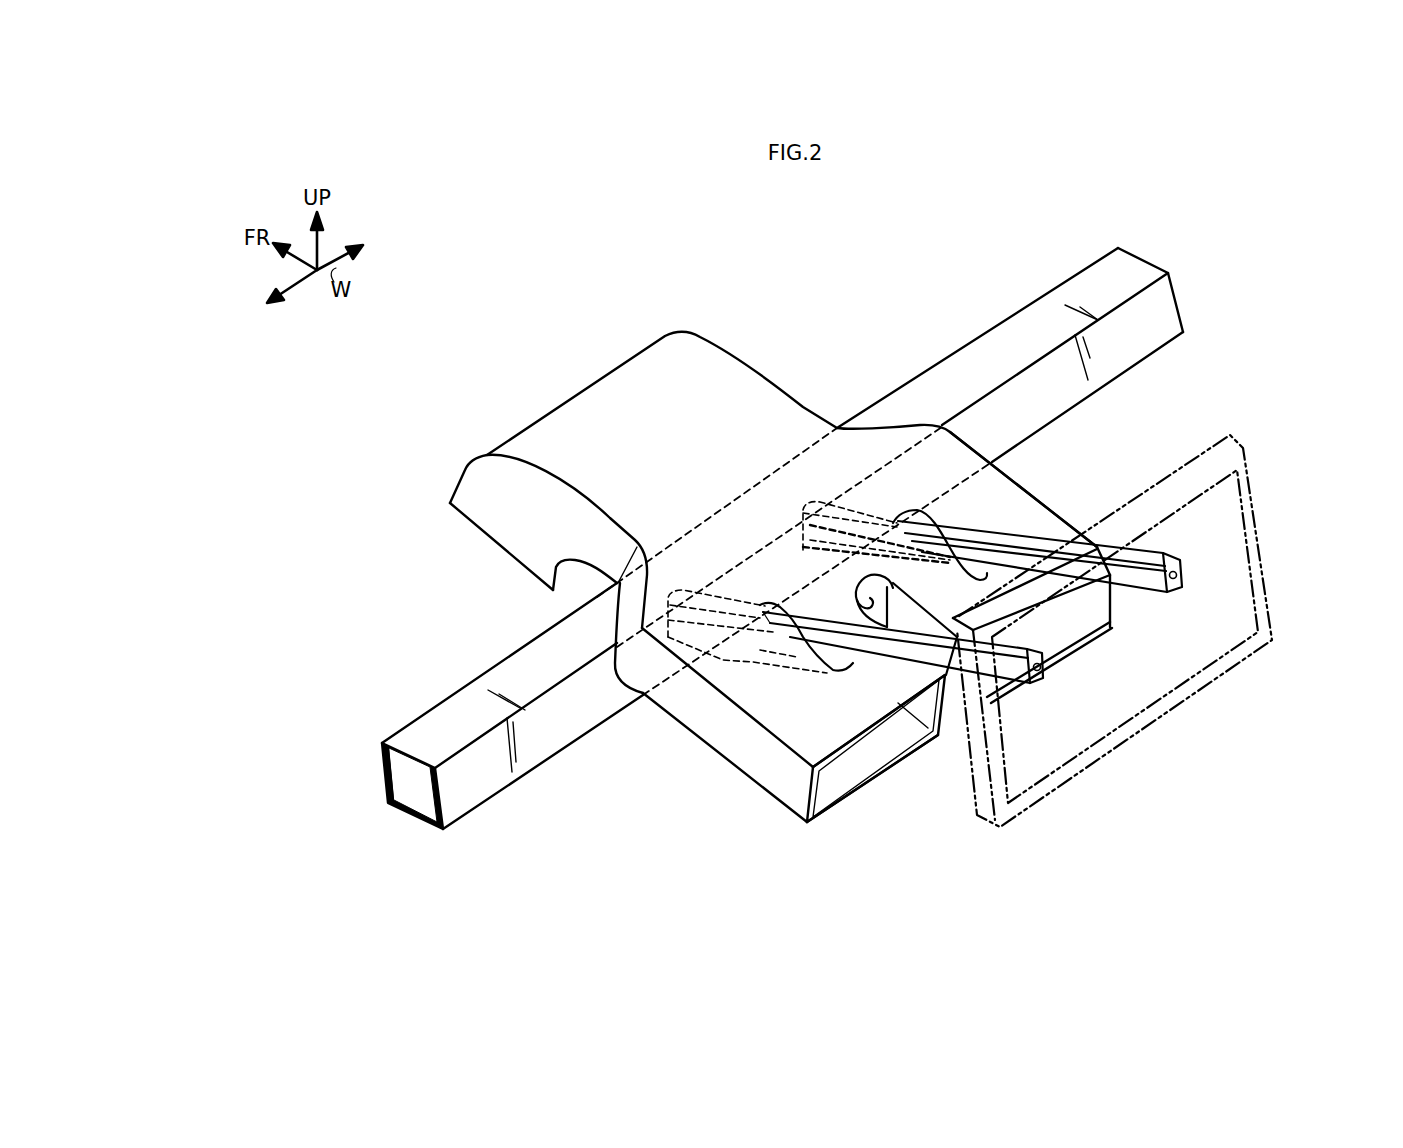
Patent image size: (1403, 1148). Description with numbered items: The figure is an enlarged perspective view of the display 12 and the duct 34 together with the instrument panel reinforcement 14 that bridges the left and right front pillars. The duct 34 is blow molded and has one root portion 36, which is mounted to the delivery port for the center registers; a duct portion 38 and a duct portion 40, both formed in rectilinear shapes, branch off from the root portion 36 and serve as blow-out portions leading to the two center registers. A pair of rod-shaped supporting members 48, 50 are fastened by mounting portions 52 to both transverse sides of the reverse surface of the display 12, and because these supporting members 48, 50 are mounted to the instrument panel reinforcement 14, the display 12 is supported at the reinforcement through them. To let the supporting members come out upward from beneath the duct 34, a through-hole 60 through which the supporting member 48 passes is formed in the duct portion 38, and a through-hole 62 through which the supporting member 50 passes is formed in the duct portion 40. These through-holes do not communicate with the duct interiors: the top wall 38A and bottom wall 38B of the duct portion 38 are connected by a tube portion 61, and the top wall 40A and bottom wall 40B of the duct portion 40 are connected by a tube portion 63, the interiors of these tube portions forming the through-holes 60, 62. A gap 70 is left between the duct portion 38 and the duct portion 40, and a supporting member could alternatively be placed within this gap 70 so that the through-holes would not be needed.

The display 12 is at (1262, 548).
The instrument panel reinforcement 14 is at (542, 745).
The duct 34 is at (748, 353).
The root portion 36 is at (623, 407).
The duct portion 38 is at (742, 745).
The top wall 38A is at (827, 745).
The bottom wall 38B is at (846, 778).
The duct portion 40 is at (998, 490).
The top wall 40A is at (1017, 500).
The bottom wall 40B is at (1060, 632).
The supporting member 48 is at (880, 653).
The supporting member 50 is at (1030, 553).
The mounting portion 52 is at (1042, 681).
The through-hole 60 is at (797, 650).
The tube portion 61 is at (838, 668).
The through-hole 62 is at (905, 555).
The tube portion 63 is at (973, 575).
The gap 70 is at (860, 612).